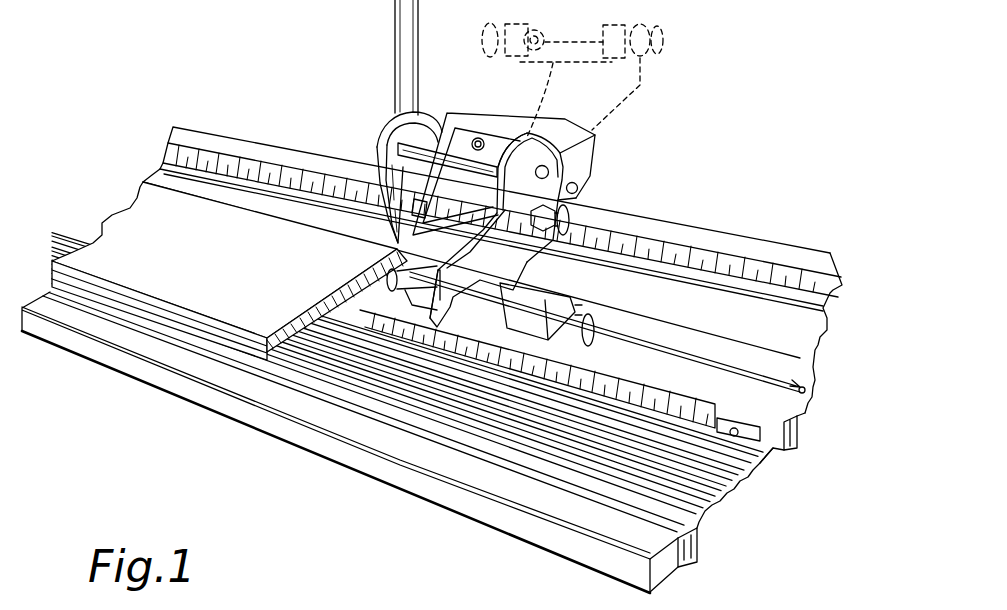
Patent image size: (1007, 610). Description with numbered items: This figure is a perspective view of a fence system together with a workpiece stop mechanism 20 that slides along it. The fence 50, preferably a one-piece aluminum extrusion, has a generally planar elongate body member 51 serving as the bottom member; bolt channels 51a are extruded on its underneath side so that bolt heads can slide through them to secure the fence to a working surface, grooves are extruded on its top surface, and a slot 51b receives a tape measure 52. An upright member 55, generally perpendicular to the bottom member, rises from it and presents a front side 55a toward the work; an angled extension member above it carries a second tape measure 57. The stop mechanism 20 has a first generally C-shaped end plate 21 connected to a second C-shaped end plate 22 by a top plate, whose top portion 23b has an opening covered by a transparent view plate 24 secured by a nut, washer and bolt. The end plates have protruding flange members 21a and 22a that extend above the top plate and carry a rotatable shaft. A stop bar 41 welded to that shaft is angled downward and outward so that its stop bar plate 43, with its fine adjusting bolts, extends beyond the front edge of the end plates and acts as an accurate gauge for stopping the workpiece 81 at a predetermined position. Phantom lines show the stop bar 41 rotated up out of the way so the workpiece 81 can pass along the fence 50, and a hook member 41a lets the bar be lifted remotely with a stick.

The workpiece stop mechanism 20 is at (730, 173).
The first generally C-shaped end plate 21 is at (378, 152).
The protruding flange member 21a is at (397, 177).
The second C-shaped end plate 22 is at (570, 167).
The protruding flange member 22a is at (517, 150).
The top portion 23b is at (444, 252).
The transparent view plate 24 is at (447, 178).
The stop bar 41 is at (512, 265).
The hook member 41a is at (440, 317).
The stop bar plate 43 is at (536, 309).
The fence 50 is at (870, 387).
The generally planar elongate body member 51 is at (707, 507).
The bolt channels 51a is at (797, 448).
The slot 51b is at (767, 457).
The tape measure 52 is at (667, 407).
The upright member 55 is at (714, 359).
The front side 55a is at (807, 400).
The tape measure 57 is at (805, 291).
The workpiece 81 is at (232, 272).